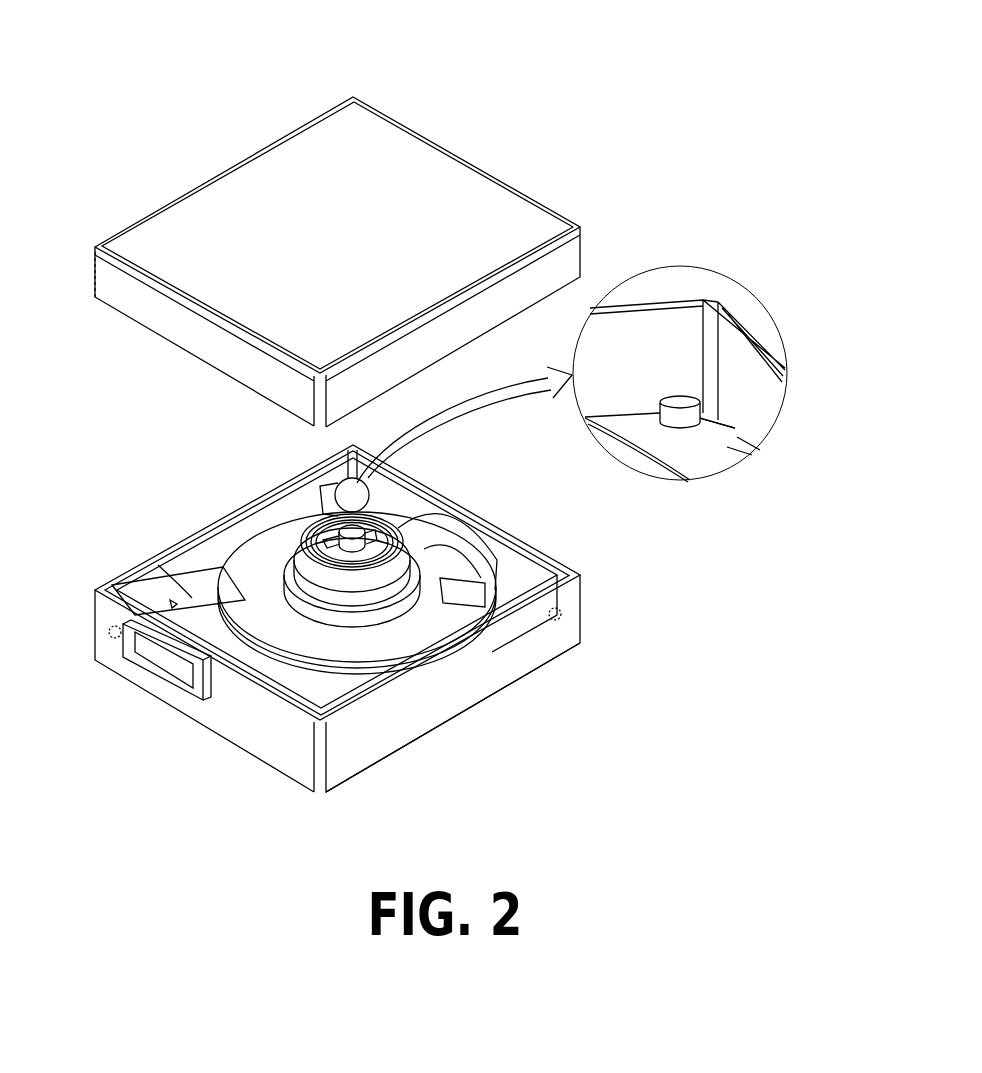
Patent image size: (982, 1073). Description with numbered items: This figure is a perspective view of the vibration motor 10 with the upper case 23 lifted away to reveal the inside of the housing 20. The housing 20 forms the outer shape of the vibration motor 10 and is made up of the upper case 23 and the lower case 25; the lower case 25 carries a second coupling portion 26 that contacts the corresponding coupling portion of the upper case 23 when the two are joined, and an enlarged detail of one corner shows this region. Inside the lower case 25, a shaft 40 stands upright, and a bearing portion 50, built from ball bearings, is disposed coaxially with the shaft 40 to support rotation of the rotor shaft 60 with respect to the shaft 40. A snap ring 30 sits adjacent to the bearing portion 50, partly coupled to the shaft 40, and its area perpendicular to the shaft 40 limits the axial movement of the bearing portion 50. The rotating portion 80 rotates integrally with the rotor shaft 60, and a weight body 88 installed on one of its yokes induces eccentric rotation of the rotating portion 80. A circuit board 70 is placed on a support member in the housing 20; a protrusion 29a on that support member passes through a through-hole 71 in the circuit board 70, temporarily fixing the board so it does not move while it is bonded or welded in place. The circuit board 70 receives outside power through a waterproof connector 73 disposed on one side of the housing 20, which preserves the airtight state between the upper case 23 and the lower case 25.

The vibration motor 10 is at (132, 60).
The housing 20 is at (471, 474).
The upper case 23 is at (433, 160).
The lower case 25 is at (570, 613).
The second coupling portion 26 is at (750, 328).
The protrusion 29a is at (682, 400).
The snap ring 30 is at (385, 516).
The shaft 40 is at (320, 500).
The bearing portion 50 is at (395, 530).
The rotor shaft 60 is at (240, 567).
The circuit board 70 is at (142, 560).
The through-hole 71 is at (687, 420).
The connector 73 is at (127, 647).
The rotating portion 80 is at (192, 546).
The weight body 88 is at (480, 553).